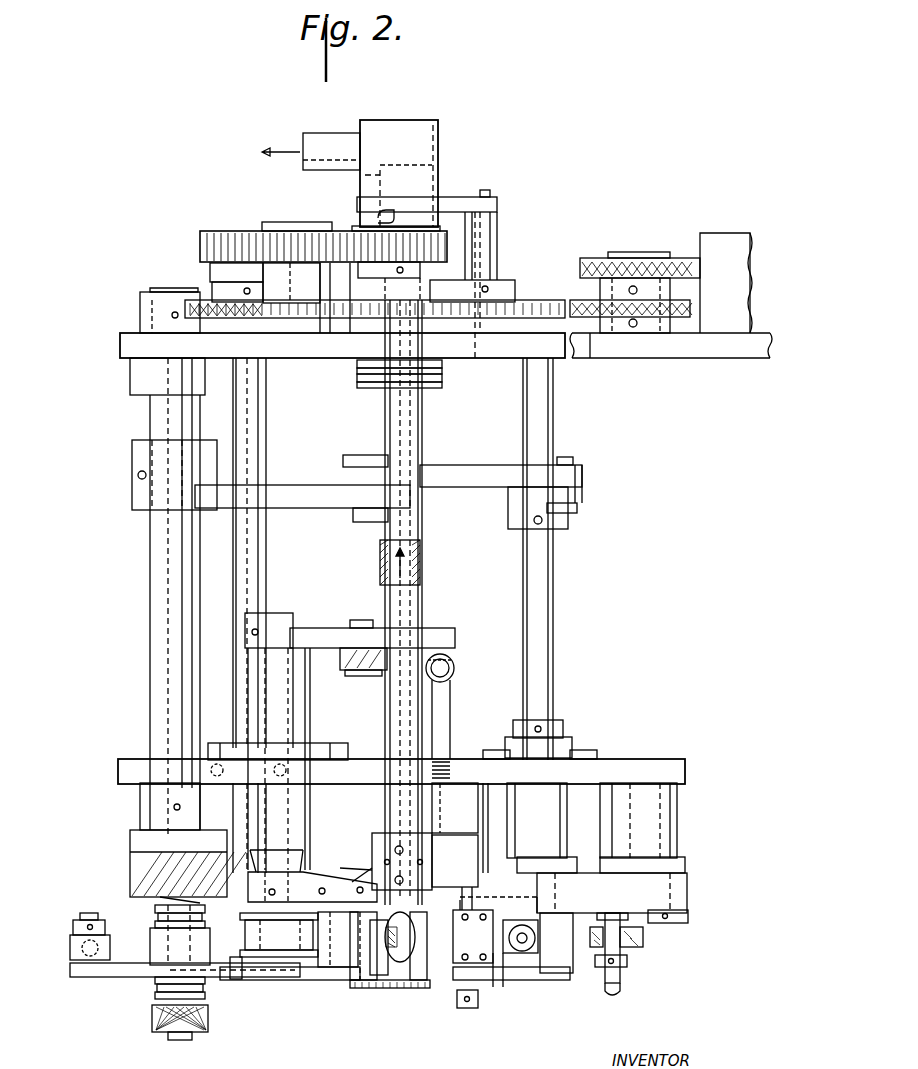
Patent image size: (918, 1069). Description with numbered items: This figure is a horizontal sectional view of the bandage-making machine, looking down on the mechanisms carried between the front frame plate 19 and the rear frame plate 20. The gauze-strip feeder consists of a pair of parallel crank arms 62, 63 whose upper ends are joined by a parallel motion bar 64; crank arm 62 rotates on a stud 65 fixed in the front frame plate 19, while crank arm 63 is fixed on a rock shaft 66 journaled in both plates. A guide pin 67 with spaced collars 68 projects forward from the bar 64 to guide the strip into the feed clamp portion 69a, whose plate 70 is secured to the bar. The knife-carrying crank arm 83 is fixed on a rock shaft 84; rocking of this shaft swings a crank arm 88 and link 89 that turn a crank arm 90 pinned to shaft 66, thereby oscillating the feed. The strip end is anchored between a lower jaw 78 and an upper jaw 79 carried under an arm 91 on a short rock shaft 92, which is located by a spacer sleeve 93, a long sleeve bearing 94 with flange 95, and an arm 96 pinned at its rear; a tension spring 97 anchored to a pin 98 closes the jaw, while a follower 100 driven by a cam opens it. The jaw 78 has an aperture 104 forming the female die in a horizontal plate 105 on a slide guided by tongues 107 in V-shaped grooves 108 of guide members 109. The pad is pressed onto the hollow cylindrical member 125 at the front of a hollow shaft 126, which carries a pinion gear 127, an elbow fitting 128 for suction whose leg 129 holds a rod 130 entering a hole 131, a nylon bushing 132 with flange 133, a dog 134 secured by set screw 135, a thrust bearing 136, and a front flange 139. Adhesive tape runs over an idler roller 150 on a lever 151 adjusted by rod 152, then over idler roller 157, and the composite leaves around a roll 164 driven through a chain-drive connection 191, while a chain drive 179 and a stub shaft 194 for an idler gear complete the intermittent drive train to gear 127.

The front frame plate 19 is at (648, 757).
The rear frame plate 20 is at (666, 358).
The crank arm 62 is at (668, 860).
The crank arm 63 is at (560, 858).
The parallel motion bar 64 is at (656, 887).
The stud 65 is at (660, 796).
The rock shaft 66 is at (553, 612).
The guide pin 67 is at (622, 990).
The collars 68 is at (616, 911).
The mounting block 69a is at (490, 1012).
The plate 70 is at (530, 955).
The jaw 78 is at (378, 982).
The jaw 79 is at (359, 984).
The crank arm 83 is at (130, 863).
The rock shaft 84 is at (150, 655).
The crank arm 88 is at (318, 472).
The link 89 is at (470, 468).
The crank arm 90 is at (565, 492).
The arm 91 is at (347, 860).
The rock shaft 92 is at (285, 612).
The spacer sleeve 93 is at (292, 797).
The sleeve bearing 94 is at (298, 712).
The flange 95 is at (298, 742).
The arm 96 is at (400, 628).
The tension spring 97 is at (455, 662).
The pin 98 is at (452, 705).
The follower 100 is at (355, 674).
The aperture 104 is at (420, 982).
The horizontal plate 105 is at (402, 851).
The tongues 107 is at (372, 850).
The V-shaped grooves 108 is at (446, 860).
The guide members 109 is at (342, 840).
The hollow cylindrical member 125 is at (342, 969).
The hollow shaft 126 is at (420, 590).
The pinion gear 127 is at (450, 246).
The elbow fitting 128 is at (397, 133).
The leg 129 is at (458, 196).
The rod 130 is at (497, 250).
The hole 131 is at (490, 345).
The nylon bushing 132 is at (378, 185).
The flange 133 is at (376, 216).
The dog 134 is at (515, 290).
The set screw 135 is at (488, 286).
The thrust bearing 136 is at (356, 372).
The flange 139 is at (395, 967).
The idler roller 150 is at (282, 962).
The lever 151 is at (124, 976).
The rod 152 is at (68, 950).
The idler roller 157 is at (310, 982).
The roll 164 is at (246, 978).
The chain drive 179 is at (620, 262).
The chain-drive connection 191 is at (360, 336).
The stub shaft 194 is at (312, 300).